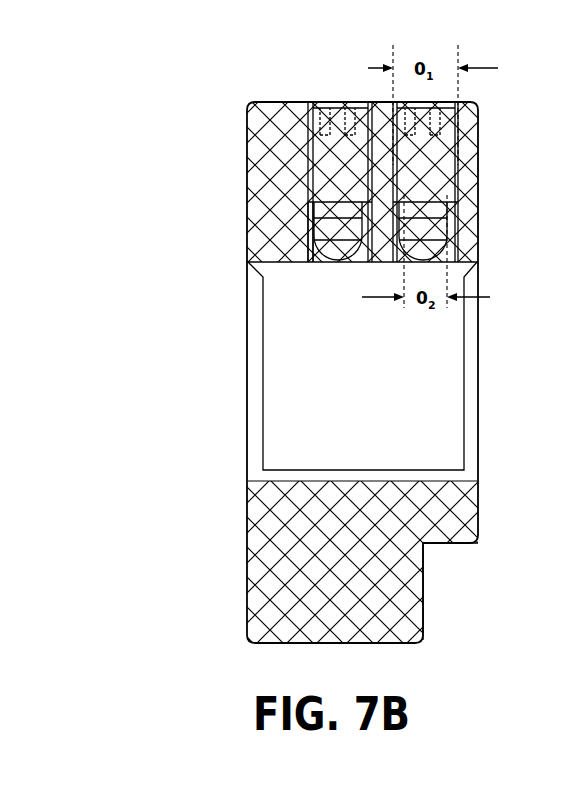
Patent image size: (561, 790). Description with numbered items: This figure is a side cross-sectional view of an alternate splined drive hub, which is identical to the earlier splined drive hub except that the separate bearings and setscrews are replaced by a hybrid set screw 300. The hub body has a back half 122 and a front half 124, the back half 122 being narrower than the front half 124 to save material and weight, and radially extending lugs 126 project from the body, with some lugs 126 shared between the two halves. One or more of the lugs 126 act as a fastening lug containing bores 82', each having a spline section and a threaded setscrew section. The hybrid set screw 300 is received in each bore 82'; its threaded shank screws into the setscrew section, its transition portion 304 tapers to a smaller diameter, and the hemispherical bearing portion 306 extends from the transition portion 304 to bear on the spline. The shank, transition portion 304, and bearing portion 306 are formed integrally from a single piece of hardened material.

The hybrid set screw 300 is at (325, 158).
The bore 82' is at (258, 212).
The bearing portion 306 is at (325, 258).
The transition portion 304 is at (425, 210).
The lug 126 is at (236, 542).
The back half 122 is at (247, 622).
The front half 124 is at (445, 545).